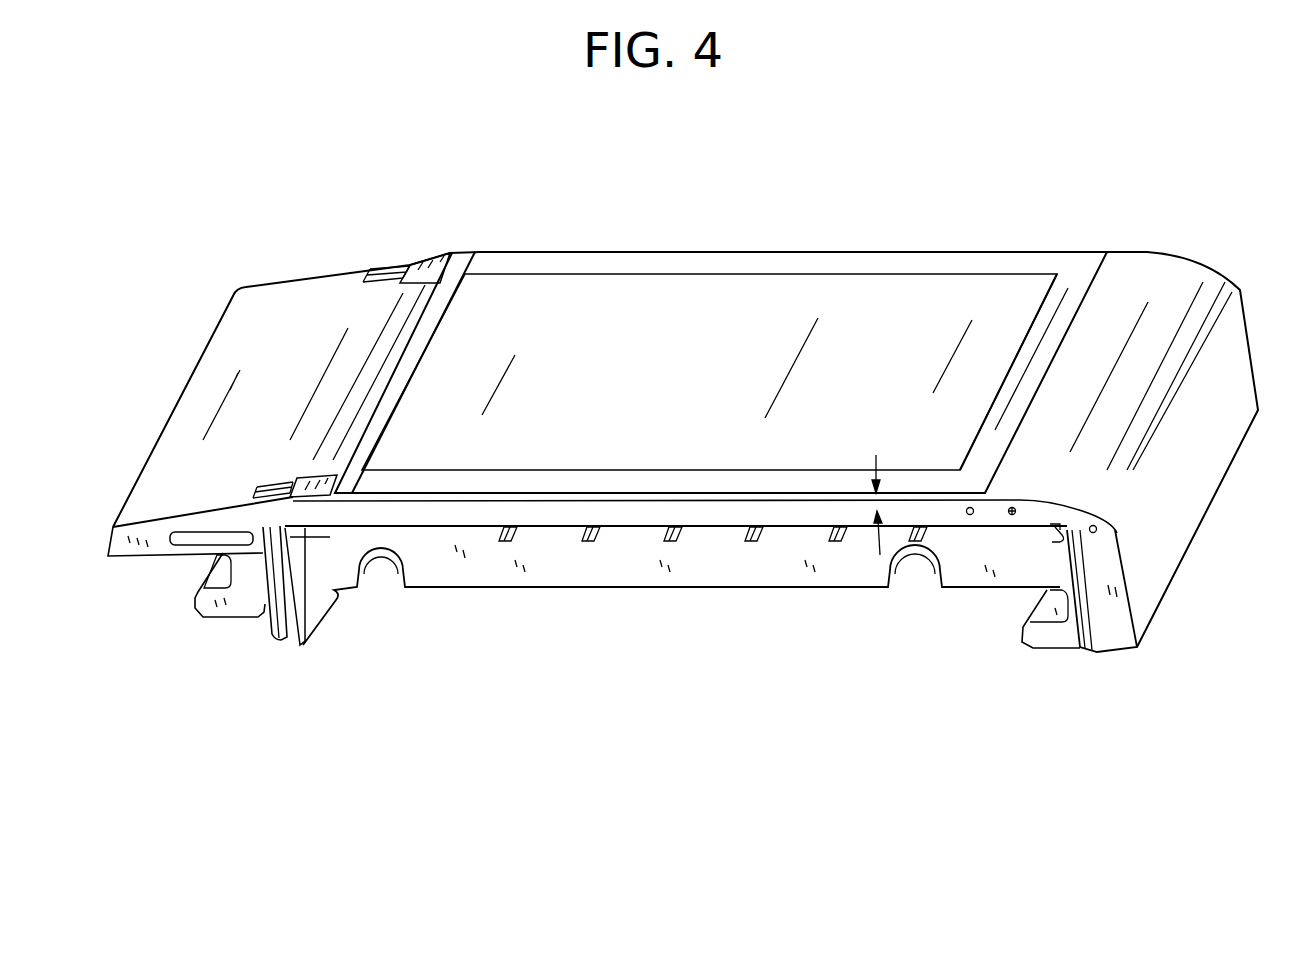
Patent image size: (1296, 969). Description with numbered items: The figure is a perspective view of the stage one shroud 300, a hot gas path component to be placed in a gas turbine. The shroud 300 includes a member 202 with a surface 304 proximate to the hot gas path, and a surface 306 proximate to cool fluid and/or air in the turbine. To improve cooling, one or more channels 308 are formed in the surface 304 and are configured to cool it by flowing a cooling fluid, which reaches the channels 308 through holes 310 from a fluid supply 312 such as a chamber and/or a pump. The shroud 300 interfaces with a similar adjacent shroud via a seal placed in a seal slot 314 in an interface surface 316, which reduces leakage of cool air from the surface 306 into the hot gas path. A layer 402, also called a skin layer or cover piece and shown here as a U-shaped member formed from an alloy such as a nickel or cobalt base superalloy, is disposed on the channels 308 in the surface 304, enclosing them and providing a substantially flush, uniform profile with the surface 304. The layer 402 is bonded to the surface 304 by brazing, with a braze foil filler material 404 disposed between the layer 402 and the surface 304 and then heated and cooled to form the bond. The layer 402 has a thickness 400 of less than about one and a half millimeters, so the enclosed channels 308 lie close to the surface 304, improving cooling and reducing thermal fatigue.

The stage one shroud 300 is at (757, 157).
The member 202 is at (654, 396).
The surface 304 is at (903, 303).
The surface 306 is at (691, 588).
The channels 308 is at (385, 260).
The holes 310 is at (1012, 507).
The fluid supply 312 is at (827, 590).
The seal slot 314 is at (562, 530).
The interface surface 316 is at (447, 568).
The thickness 400 is at (877, 490).
The layer 402 is at (620, 262).
The braze foil filler material 404 is at (554, 512).